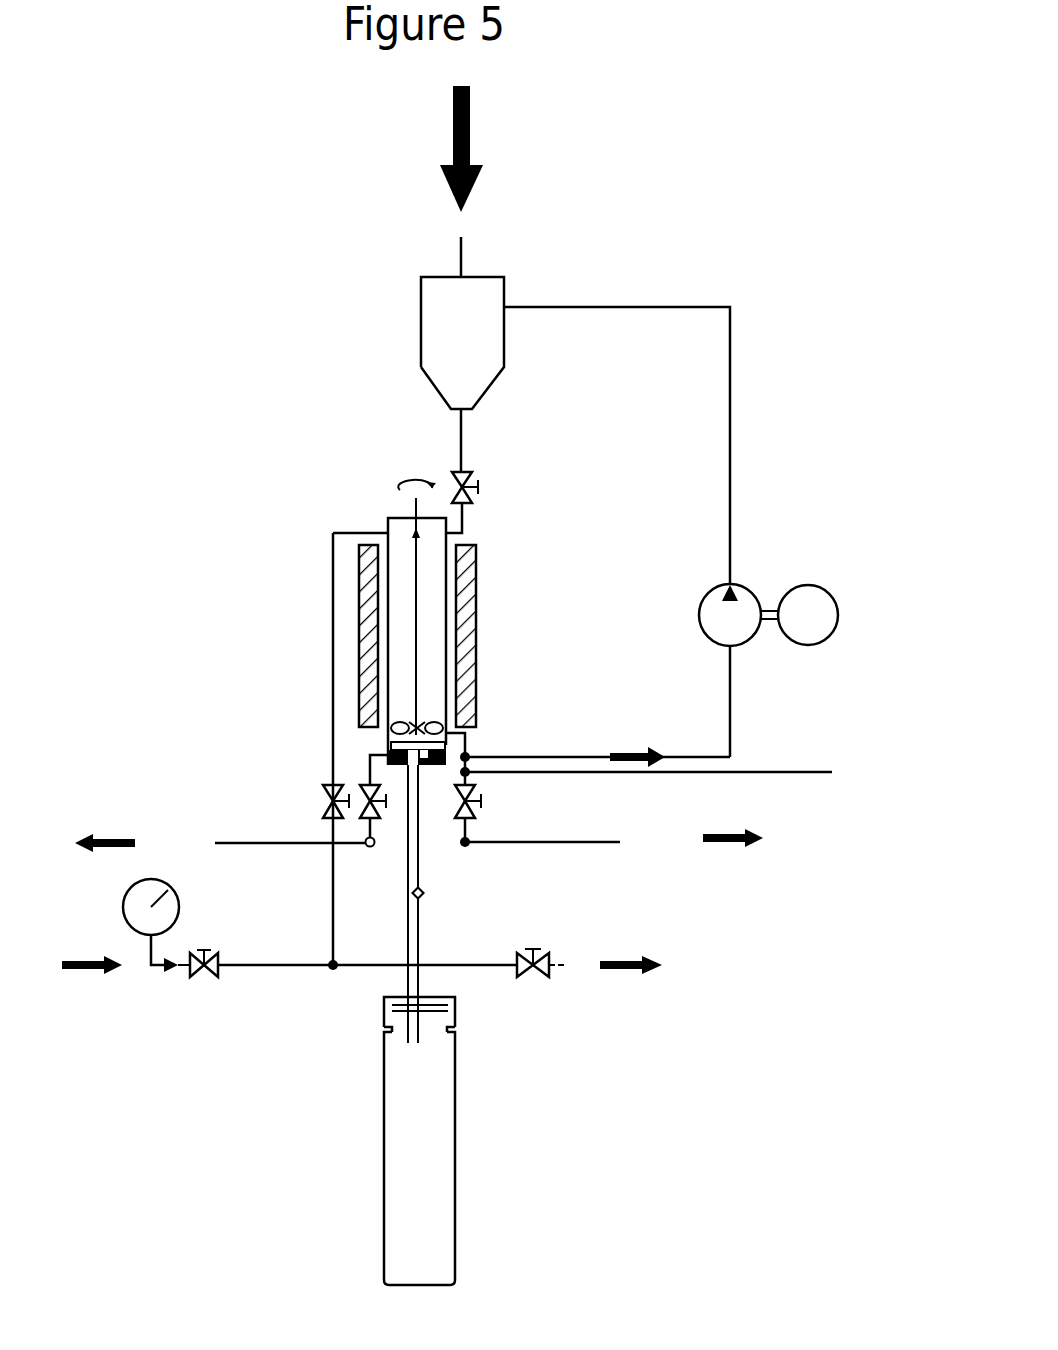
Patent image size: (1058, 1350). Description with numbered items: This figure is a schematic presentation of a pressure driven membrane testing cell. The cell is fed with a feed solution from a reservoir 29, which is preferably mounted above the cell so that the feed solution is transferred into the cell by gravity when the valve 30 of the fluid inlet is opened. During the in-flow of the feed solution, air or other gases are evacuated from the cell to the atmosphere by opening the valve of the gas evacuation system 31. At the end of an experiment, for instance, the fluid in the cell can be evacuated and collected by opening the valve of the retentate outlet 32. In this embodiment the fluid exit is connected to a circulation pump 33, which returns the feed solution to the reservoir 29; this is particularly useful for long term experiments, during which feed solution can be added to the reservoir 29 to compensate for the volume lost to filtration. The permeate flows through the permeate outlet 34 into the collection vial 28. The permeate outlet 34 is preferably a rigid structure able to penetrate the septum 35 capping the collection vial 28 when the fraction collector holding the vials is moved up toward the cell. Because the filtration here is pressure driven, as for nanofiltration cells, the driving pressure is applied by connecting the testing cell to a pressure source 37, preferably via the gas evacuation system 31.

The collection vial 28 is at (432, 1173).
The reservoir 29 is at (478, 318).
The valve of fluid inlet 30 is at (464, 473).
The gas evacuation system 31 is at (333, 739).
The retentate outlet 32 is at (676, 773).
The circulation pump 33 is at (750, 590).
The permeate outlet 34 is at (418, 893).
The septum 35 is at (450, 1006).
The pressure source 37 is at (120, 922).